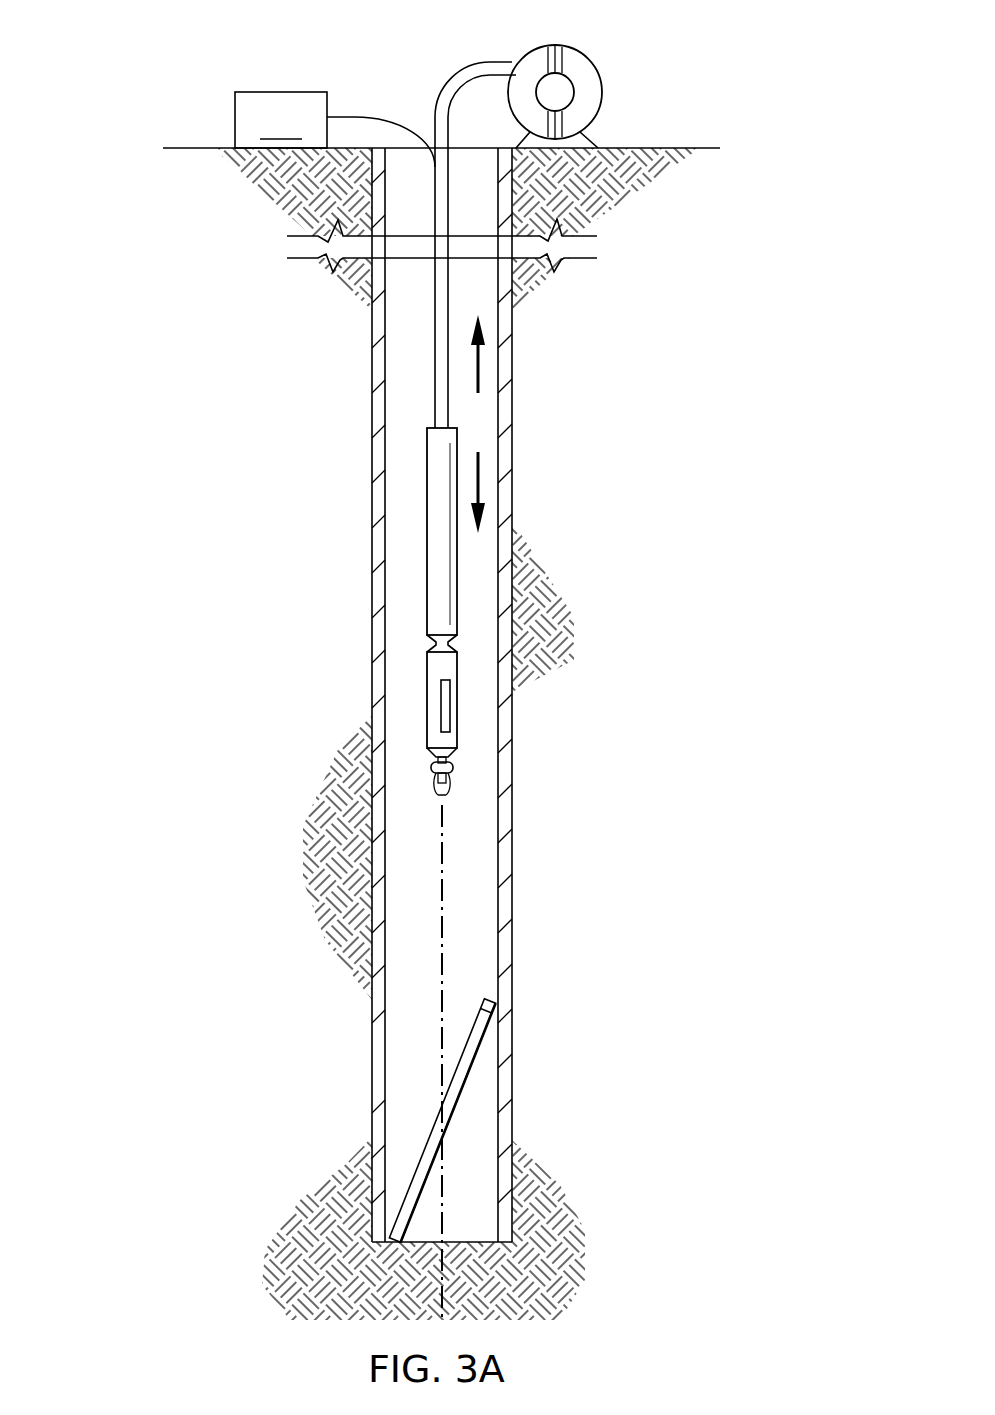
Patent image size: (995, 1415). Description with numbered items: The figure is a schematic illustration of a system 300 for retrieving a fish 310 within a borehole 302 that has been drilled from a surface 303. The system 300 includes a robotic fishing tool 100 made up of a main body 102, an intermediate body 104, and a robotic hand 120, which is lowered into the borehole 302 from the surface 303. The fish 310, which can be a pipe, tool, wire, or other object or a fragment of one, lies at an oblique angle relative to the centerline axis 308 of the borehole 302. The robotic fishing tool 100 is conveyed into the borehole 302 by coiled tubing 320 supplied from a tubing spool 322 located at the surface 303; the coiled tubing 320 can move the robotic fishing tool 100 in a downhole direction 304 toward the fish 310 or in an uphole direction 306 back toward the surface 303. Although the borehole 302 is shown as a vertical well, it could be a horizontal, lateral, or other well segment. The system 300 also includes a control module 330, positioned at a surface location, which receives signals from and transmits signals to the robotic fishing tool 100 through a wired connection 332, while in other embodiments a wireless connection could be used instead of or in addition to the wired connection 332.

The robotic fishing tool 100 is at (441, 611).
The main body 102 is at (427, 570).
The intermediate body 104 is at (427, 692).
The robotic hand 120 is at (455, 770).
The system 300 is at (188, 250).
The borehole 302 is at (375, 1100).
The surface 303 is at (195, 147).
The downhole direction 304 is at (479, 488).
The uphole direction 306 is at (479, 387).
The centerline axis 308 is at (445, 958).
The fish 310 is at (480, 1065).
The coiled tubing 320 is at (435, 345).
The tubing spool 322 is at (588, 58).
The control module 330 is at (281, 120).
The wired connection 332 is at (376, 121).